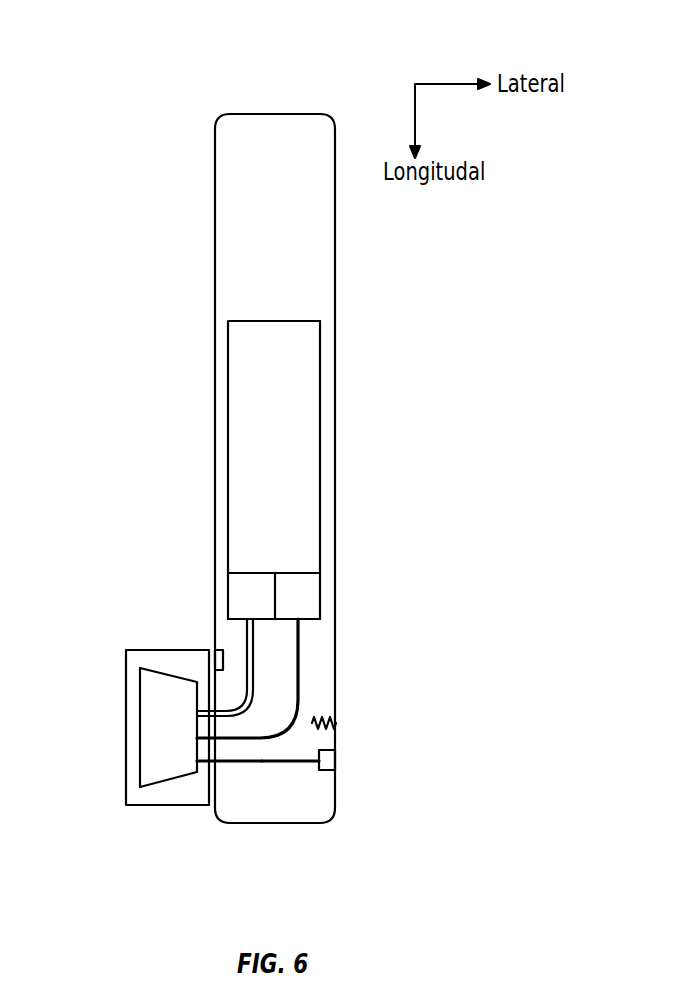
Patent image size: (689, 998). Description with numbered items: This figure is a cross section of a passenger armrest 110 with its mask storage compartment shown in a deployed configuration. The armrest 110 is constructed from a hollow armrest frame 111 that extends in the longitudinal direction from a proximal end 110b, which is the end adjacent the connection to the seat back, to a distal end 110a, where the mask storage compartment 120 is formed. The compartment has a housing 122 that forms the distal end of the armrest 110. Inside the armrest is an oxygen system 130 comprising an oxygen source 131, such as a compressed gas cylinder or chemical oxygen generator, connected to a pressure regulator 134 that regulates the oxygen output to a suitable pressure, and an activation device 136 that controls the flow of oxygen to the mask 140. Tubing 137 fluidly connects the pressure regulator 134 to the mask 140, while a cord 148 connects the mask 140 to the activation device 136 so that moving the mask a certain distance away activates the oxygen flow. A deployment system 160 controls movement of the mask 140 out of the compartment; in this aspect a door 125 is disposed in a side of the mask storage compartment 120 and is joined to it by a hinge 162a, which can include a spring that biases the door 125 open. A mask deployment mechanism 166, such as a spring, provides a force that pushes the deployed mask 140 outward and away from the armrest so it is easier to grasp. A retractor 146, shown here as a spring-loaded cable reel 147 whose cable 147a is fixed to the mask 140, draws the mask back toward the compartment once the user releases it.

The passenger armrest 110 is at (158, 150).
The distal end 110a is at (320, 825).
The proximal end 110b is at (291, 114).
The armrest frame 111 is at (335, 245).
The mask storage compartment 120 is at (335, 795).
The housing 122 is at (305, 813).
The door 125 is at (130, 797).
The oxygen system 130 is at (311, 355).
The oxygen source 131 is at (311, 402).
The pressure regulator 134 is at (245, 585).
The activation device 136 is at (313, 595).
The tubing 137 is at (248, 632).
The mask 140 is at (150, 688).
The retractor 146 is at (329, 755).
The spring-loaded cable reel 147 is at (335, 766).
The cable 147a is at (256, 762).
The cord 148 is at (298, 647).
The deployment system 160 is at (217, 660).
The hinge 162a is at (205, 800).
The mask deployment mechanism 166 is at (335, 723).